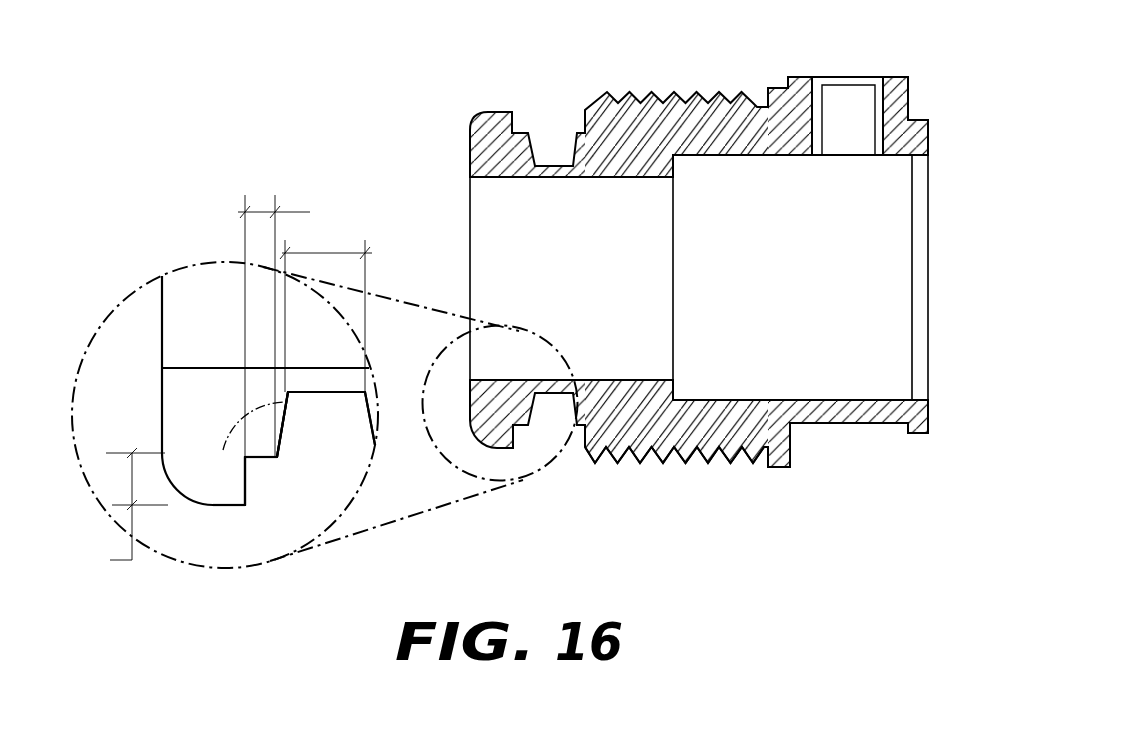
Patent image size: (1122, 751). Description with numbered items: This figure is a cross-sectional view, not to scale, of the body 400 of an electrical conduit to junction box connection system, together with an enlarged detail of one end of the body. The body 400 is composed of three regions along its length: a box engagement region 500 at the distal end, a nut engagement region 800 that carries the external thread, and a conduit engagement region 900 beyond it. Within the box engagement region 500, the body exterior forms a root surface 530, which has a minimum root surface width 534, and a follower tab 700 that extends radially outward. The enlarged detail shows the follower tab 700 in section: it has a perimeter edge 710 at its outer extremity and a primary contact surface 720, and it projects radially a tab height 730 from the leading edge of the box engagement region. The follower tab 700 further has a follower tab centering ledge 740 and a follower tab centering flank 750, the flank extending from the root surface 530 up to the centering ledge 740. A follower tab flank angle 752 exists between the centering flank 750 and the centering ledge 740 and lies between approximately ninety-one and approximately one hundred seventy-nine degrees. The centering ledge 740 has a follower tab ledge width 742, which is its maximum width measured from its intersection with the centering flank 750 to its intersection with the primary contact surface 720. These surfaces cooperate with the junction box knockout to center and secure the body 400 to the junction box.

The box engagement region 500 is at (585, 98).
The body 400 is at (802, 77).
The nut engagement region 800 is at (790, 473).
The conduit engagement region 900 is at (928, 443).
The root surface 530 is at (330, 392).
The minimum root surface width 534 is at (326, 316).
The follower tab 700 is at (190, 498).
The follower tab perimeter edge 710 is at (223, 507).
The primary contact surface 720 is at (250, 478).
The tab height 730 is at (115, 509).
The follower tab centering ledge 740 is at (273, 463).
The follower tab ledge width 742 is at (298, 326).
The follower tab centering flank 750 is at (280, 428).
The follower tab flank angle 752 is at (240, 420).